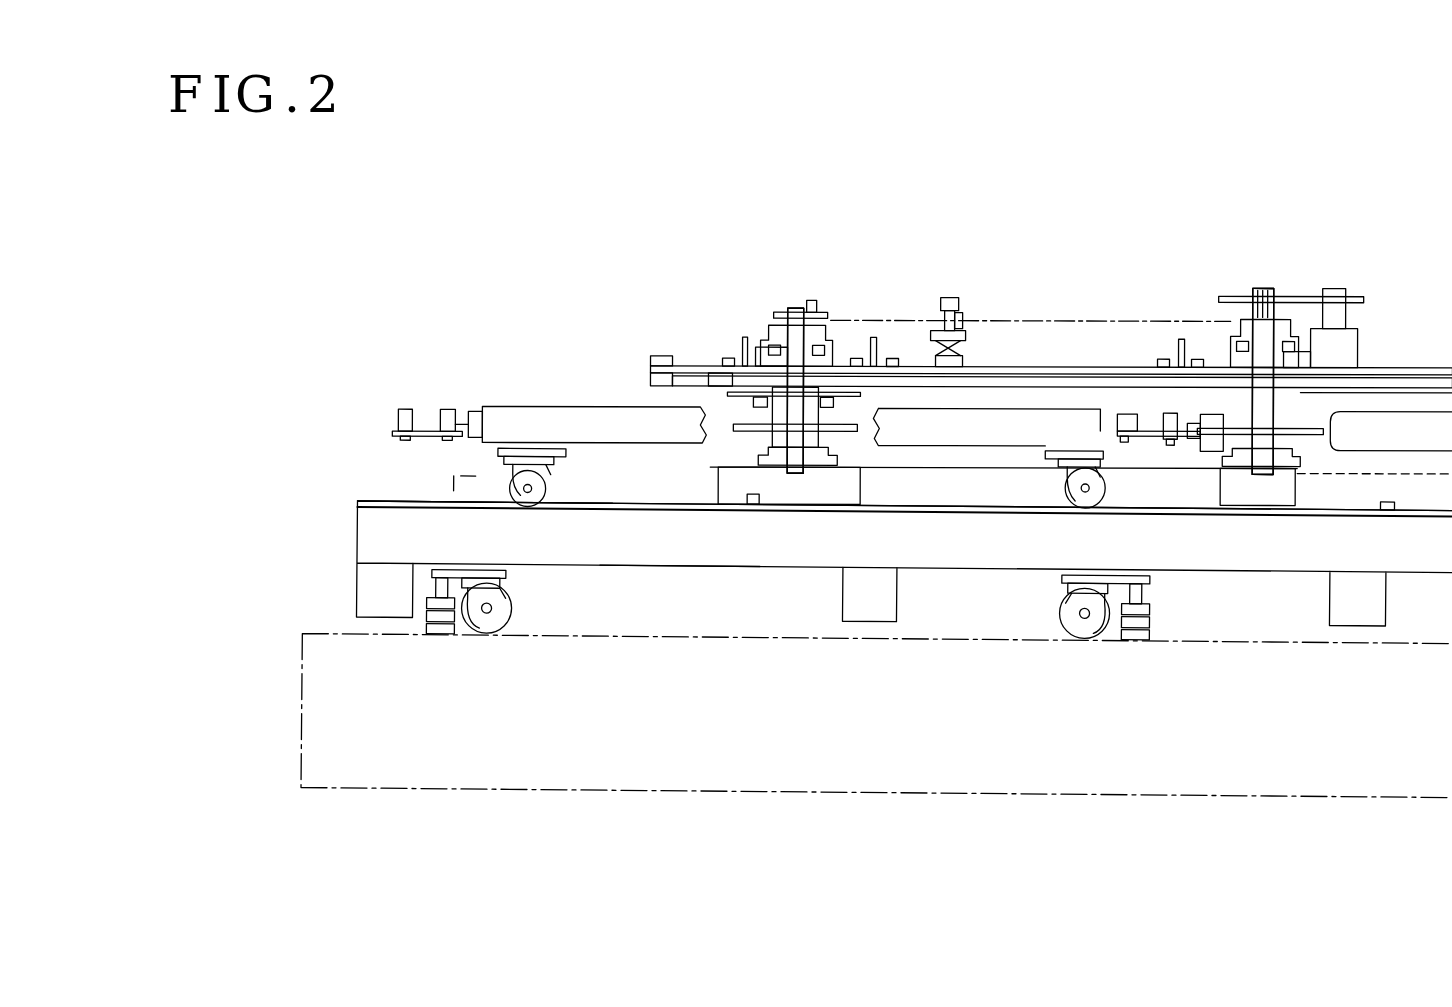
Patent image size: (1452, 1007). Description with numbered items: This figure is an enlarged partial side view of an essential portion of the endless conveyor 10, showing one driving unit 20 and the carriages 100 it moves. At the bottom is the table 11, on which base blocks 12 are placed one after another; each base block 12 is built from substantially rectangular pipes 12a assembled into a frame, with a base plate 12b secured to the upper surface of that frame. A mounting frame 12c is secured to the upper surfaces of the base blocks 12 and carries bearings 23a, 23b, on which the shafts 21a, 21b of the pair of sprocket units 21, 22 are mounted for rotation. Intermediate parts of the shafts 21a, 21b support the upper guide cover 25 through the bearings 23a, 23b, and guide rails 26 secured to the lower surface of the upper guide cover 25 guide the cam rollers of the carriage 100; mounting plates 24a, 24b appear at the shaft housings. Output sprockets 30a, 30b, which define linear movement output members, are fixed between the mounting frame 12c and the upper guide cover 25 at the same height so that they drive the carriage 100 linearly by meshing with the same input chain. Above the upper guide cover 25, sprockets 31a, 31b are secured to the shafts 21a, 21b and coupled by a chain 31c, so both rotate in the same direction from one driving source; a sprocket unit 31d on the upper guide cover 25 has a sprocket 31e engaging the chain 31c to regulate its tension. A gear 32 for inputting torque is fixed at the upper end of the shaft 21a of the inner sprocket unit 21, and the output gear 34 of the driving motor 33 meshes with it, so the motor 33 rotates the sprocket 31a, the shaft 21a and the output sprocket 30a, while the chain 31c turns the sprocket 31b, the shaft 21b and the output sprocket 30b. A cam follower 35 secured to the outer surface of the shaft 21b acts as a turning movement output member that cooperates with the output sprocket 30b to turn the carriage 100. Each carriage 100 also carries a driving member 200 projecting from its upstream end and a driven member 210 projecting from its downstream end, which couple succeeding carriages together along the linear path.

The endless conveyor 10 is at (541, 232).
The table 11 is at (838, 772).
The base block 12 is at (585, 569).
The rectangular pipe 12a is at (670, 573).
The base plate 12b is at (575, 505).
The mounting frame 12c is at (958, 478).
The driving unit 20 is at (1110, 180).
The sprocket unit 21 is at (1200, 285).
The shaft 21a is at (1267, 473).
The shaft 21b is at (802, 473).
The sprocket unit 22 is at (827, 290).
The bearing 23a is at (1233, 462).
The bearing 23b is at (768, 465).
The mounting plate 24a is at (1285, 365).
The mounting plate 24b is at (770, 355).
The upper guide cover 25 is at (1010, 385).
The guide rail 26 is at (680, 365).
The output sprocket 30a is at (1303, 437).
The output sprocket 30b is at (845, 452).
The sprocket 31a is at (1222, 322).
The sprocket 31b is at (775, 325).
The chain 31c is at (905, 320).
The sprocket unit 31d is at (1000, 302).
The sprocket 31e is at (982, 317).
The gear 32 is at (1265, 300).
The driving motor 33 is at (1350, 340).
The output gear 34 is at (1360, 296).
The cam follower 35 is at (737, 392).
The carriage 100 is at (548, 407).
The driving member 200 is at (1112, 397).
The driven member 210 is at (432, 400).